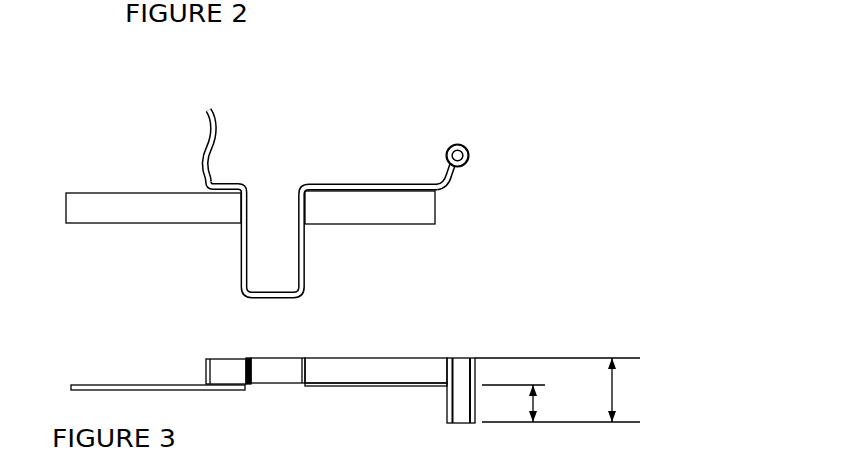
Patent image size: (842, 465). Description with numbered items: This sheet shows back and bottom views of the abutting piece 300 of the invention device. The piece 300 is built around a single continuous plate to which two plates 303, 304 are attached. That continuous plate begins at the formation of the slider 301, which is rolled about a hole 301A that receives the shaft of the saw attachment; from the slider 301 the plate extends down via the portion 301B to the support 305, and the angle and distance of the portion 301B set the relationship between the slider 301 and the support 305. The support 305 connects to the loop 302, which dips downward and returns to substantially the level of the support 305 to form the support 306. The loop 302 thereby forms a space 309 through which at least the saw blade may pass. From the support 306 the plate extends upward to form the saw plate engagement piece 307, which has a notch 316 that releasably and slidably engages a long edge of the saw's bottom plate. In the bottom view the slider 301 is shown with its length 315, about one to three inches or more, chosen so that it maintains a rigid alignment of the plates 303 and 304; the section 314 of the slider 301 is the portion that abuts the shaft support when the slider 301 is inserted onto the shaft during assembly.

In FIG. 2, the abutting piece 300 is at (110, 138).
In FIG. 2, the slider 301 is at (470, 158).
In FIG. 3, the slider 301 is at (462, 393).
In FIG. 2, the hole 301A is at (457, 156).
In FIG. 2, the portion 301B is at (447, 173).
In FIG. 2, the loop 302 is at (240, 260).
In FIG. 3, the loop 302 is at (275, 370).
In FIG. 2, the plate 303 is at (332, 218).
In FIG. 3, the plate 303 is at (383, 388).
In FIG. 2, the plate 304 is at (137, 220).
In FIG. 3, the plate 304 is at (183, 390).
In FIG. 2, the support 305 is at (353, 183).
In FIG. 3, the support 305 is at (382, 366).
In FIG. 2, the support 306 is at (230, 180).
In FIG. 3, the support 306 is at (223, 372).
In FIG. 2, the saw plate engagement piece 307 is at (218, 118).
In FIG. 2, the space 309 is at (262, 272).
In FIG. 3, the section 314 is at (561, 403).
In FIG. 3, the length 315 is at (640, 390).
In FIG. 2, the notch 316 is at (215, 140).